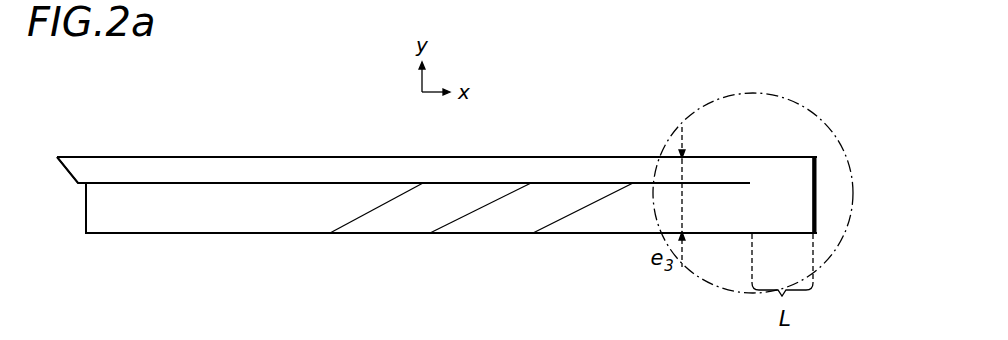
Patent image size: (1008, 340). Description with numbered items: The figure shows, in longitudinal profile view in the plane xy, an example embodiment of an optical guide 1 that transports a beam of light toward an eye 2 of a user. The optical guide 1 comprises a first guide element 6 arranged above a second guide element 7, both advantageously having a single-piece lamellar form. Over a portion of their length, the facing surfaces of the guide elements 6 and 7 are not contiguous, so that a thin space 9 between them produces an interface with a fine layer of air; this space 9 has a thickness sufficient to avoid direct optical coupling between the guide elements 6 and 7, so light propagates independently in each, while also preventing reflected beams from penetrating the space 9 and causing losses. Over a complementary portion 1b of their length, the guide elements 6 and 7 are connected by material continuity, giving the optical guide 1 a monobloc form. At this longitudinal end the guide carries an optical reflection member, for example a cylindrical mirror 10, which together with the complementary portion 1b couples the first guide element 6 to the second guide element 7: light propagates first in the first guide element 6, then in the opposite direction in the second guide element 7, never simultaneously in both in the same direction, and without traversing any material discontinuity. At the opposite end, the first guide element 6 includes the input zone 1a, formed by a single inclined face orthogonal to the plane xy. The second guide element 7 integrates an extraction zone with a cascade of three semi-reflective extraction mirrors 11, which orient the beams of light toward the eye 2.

The optical guide 1 is at (270, 240).
The input zone 1a is at (70, 173).
The complementary portion 1b is at (782, 212).
The eye 2 is at (643, 0).
The first guide element 6 is at (205, 168).
The second guide element 7 is at (202, 208).
The space 9 is at (301, 183).
The cylindrical mirror 10 is at (818, 191).
The extraction mirror 11 is at (597, 203).